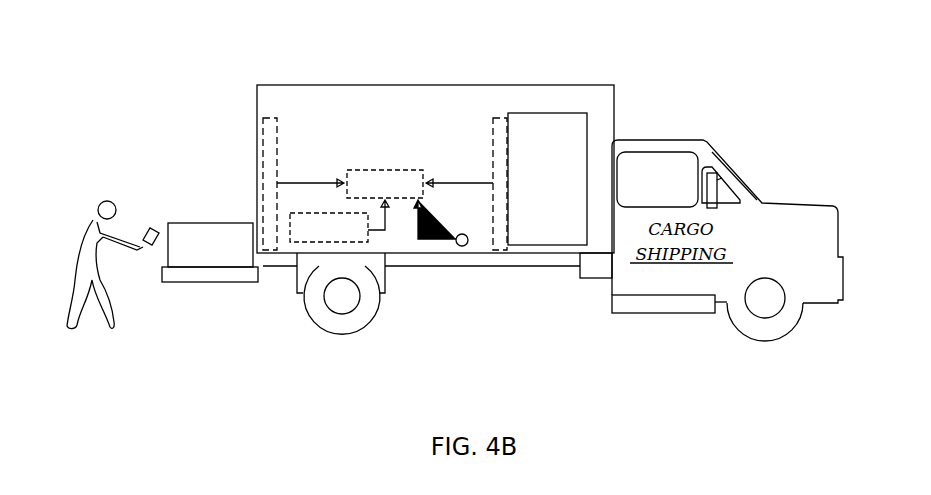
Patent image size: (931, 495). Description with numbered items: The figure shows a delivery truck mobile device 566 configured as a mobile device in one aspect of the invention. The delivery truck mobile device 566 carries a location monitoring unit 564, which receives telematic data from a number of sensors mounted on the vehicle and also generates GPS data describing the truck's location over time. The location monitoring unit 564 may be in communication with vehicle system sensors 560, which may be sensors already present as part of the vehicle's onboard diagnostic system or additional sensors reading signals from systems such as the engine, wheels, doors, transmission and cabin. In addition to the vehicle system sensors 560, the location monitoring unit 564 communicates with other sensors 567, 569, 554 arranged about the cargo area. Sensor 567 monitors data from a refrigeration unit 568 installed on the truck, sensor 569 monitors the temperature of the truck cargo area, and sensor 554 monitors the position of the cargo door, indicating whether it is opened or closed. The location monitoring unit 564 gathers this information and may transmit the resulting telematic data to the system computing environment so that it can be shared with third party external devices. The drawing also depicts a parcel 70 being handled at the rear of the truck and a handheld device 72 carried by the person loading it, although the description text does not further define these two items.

The sensor 554 is at (263, 130).
The delivery truck mobile device 566 is at (257, 155).
The sensor 567 is at (492, 120).
The refrigeration unit 568 is at (595, 132).
The location monitoring unit 564 is at (424, 178).
The sensor 569 is at (290, 245).
The vehicle system sensors 560 is at (461, 247).
The parcel 70 is at (212, 223).
The handheld device 72 is at (153, 230).